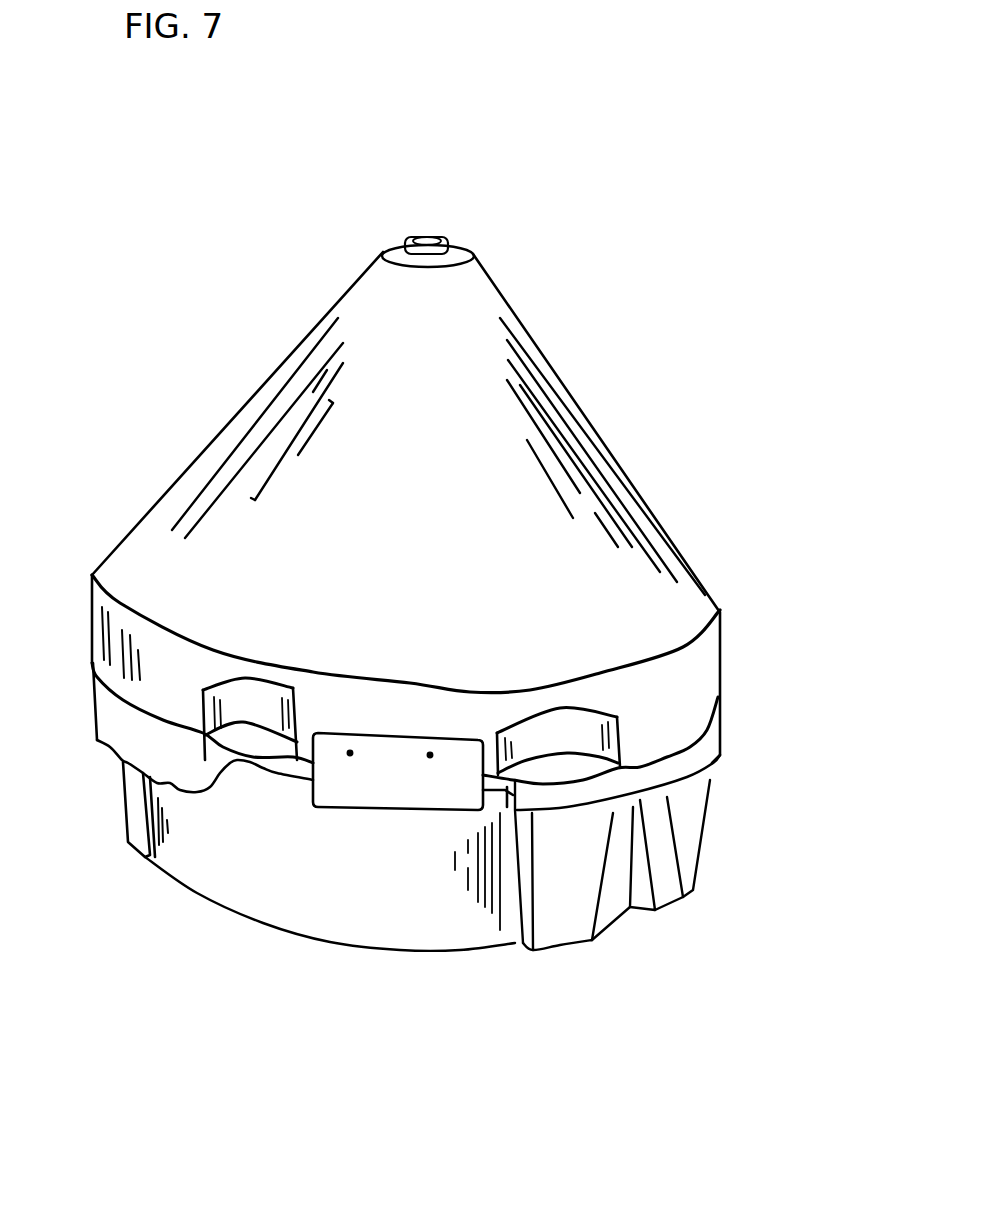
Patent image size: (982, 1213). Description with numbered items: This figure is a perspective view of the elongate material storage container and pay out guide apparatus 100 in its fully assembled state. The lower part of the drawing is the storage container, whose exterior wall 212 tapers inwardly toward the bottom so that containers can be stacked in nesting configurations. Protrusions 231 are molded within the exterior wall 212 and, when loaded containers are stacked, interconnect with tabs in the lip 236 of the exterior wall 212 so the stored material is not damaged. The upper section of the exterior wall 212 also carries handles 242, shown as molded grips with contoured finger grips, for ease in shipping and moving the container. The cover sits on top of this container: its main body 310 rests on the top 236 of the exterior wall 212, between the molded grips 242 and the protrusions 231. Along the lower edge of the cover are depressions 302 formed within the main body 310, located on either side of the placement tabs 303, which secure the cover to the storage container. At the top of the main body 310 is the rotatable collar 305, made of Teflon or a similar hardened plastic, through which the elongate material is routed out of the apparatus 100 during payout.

The elongate material storage container and pay out guide apparatus 100 is at (217, 292).
The rotatable collar 305 is at (450, 240).
The main body 310 is at (468, 503).
The depressions 302 is at (585, 727).
The placement tabs 303 is at (423, 802).
The lip 236 is at (670, 773).
The handles 242 is at (107, 747).
The exterior wall 212 is at (300, 884).
The protrusions 231 is at (672, 897).